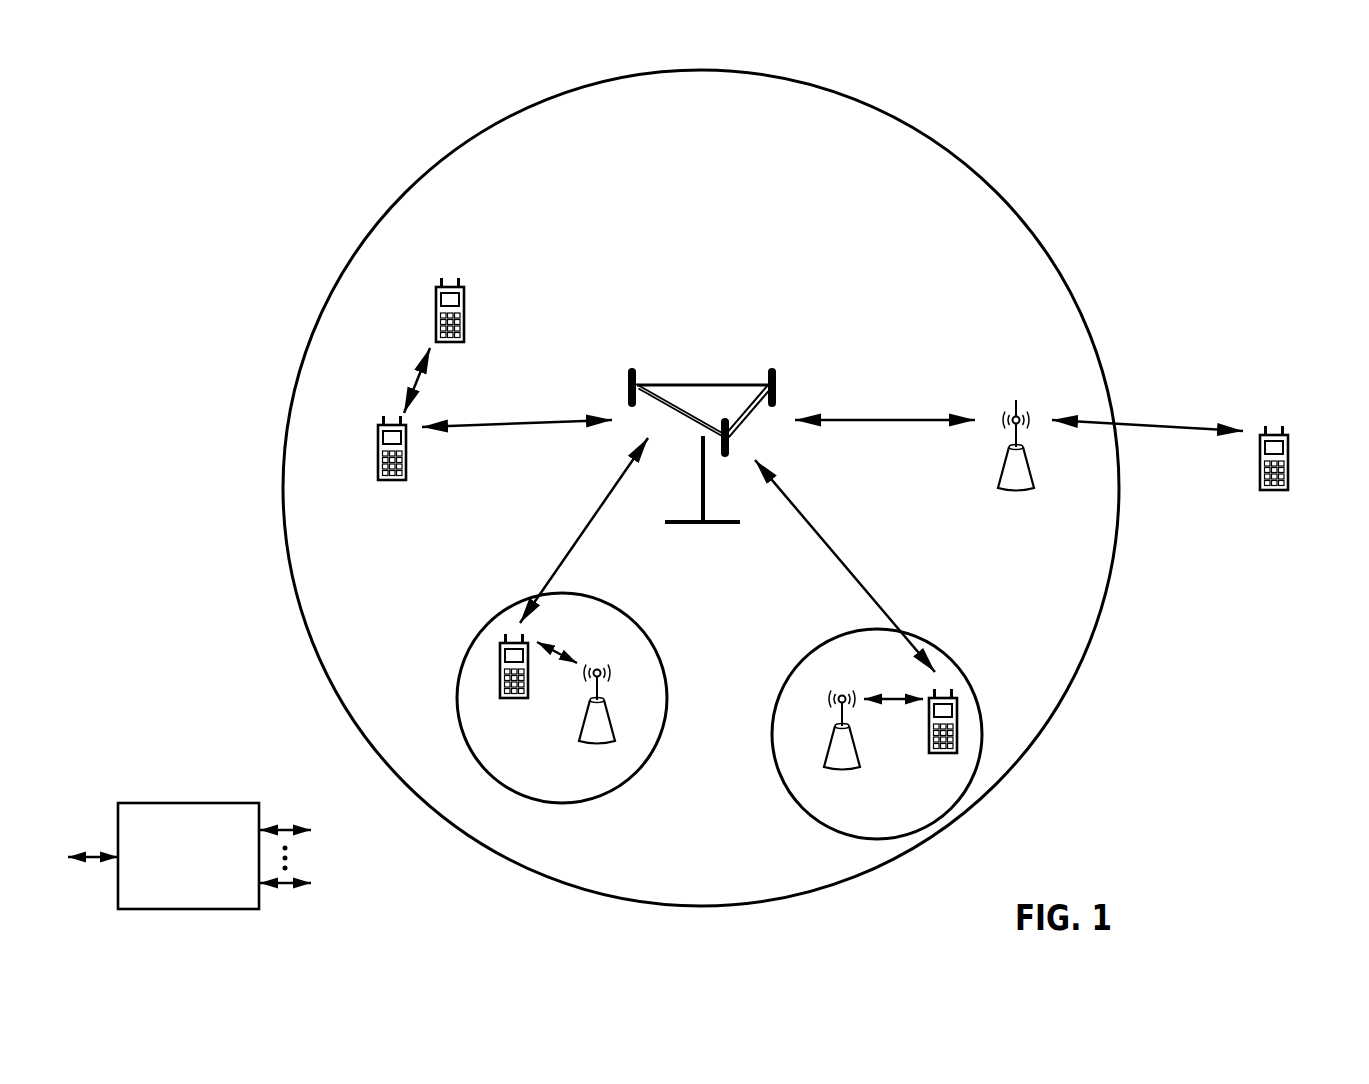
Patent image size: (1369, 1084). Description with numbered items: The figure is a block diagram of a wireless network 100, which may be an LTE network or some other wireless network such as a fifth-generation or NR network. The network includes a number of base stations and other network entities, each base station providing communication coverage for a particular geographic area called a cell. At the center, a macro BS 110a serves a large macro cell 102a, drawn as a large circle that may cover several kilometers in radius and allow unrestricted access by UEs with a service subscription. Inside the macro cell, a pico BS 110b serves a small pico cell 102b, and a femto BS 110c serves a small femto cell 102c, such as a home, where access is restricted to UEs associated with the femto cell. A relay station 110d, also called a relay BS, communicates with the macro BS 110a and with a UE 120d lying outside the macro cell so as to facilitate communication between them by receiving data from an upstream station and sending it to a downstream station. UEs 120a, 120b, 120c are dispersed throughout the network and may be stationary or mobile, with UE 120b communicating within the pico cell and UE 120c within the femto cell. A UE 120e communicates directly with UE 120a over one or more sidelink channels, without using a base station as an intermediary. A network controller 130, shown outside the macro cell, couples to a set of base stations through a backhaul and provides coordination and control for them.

The wireless network 100 is at (1164, 159).
The macro cell 102a is at (986, 173).
The pico cell 102b is at (641, 628).
The femto cell 102c is at (798, 661).
The macro BS 110a is at (706, 385).
The pico BS 110b is at (612, 723).
The femto BS 110c is at (826, 750).
The relay station 110d is at (1023, 395).
The UE 120a is at (380, 433).
The UE 120b is at (503, 693).
The UE 120c is at (930, 745).
The UE 120d is at (1289, 446).
The UE 120e is at (436, 295).
The network controller 130 is at (196, 789).